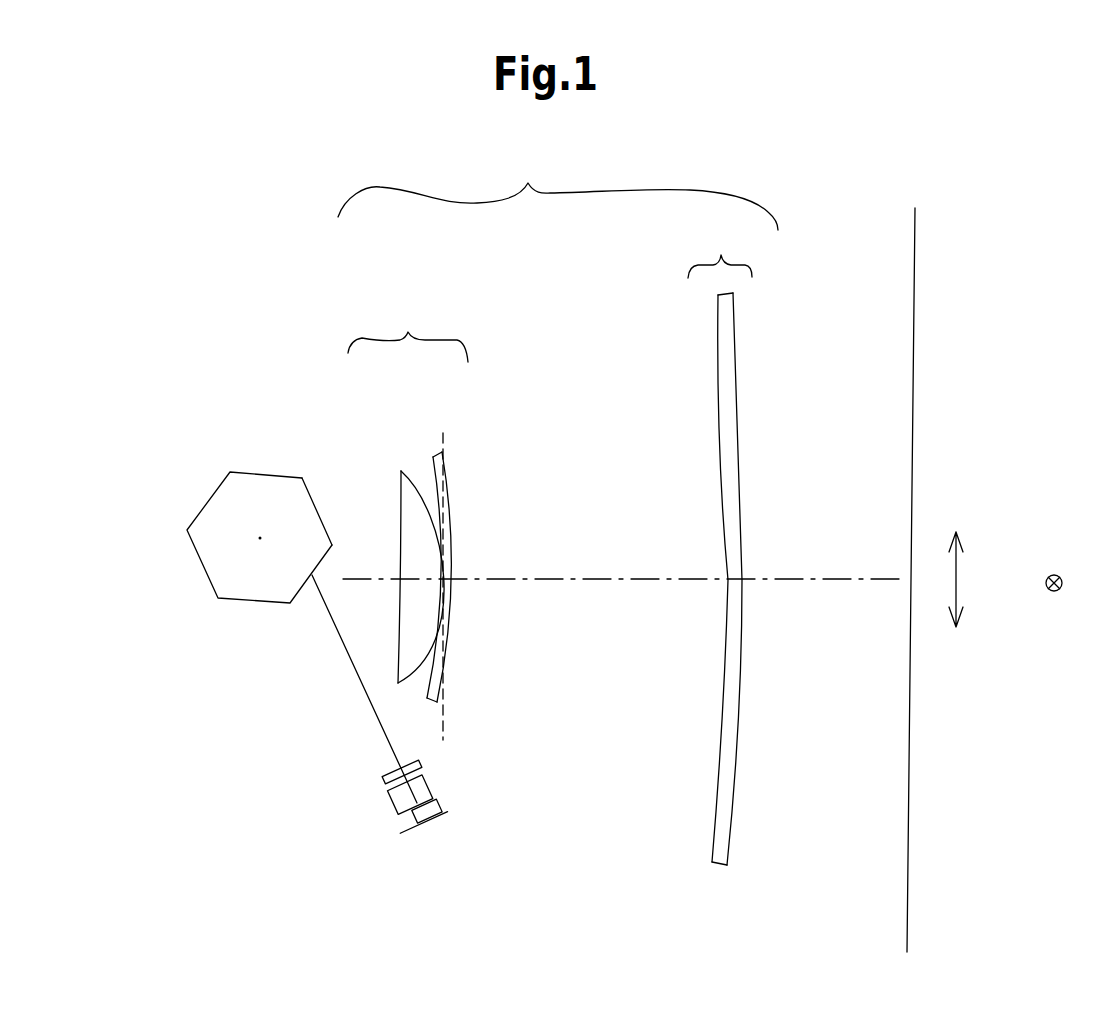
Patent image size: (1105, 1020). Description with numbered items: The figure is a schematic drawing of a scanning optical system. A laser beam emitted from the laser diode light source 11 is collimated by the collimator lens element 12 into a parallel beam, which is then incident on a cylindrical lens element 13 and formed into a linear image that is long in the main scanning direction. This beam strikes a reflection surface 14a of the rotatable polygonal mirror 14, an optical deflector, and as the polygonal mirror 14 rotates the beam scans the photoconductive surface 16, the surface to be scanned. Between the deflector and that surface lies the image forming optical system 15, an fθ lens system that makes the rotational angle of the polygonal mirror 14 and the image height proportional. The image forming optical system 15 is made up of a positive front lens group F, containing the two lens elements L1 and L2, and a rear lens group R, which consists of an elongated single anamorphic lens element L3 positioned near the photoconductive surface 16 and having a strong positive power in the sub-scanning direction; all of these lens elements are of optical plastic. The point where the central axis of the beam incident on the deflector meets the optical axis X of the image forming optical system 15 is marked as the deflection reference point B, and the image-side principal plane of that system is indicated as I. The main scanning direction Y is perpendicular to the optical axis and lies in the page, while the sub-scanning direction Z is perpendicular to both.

The image forming optical system 15 is at (558, 186).
The rear lens group R is at (720, 245).
The positive front lens group F is at (408, 327).
The lens element L1 is at (401, 471).
The lens element L2 is at (433, 457).
The elongated single anamorphic lens element L3 is at (737, 348).
The photoconductive surface 16 is at (914, 249).
The rotatable polygonal mirror 14 is at (273, 585).
The reflection surface 14a is at (308, 497).
The deflection reference point B is at (310, 580).
The cylindrical lens element 13 is at (382, 773).
The collimator lens element 12 is at (423, 785).
The laser diode light source 11 is at (447, 812).
The optical axis X is at (594, 578).
The image-side principal plane I is at (441, 712).
The main scanning direction Y is at (971, 579).
The sub scanning direction Z is at (1063, 583).